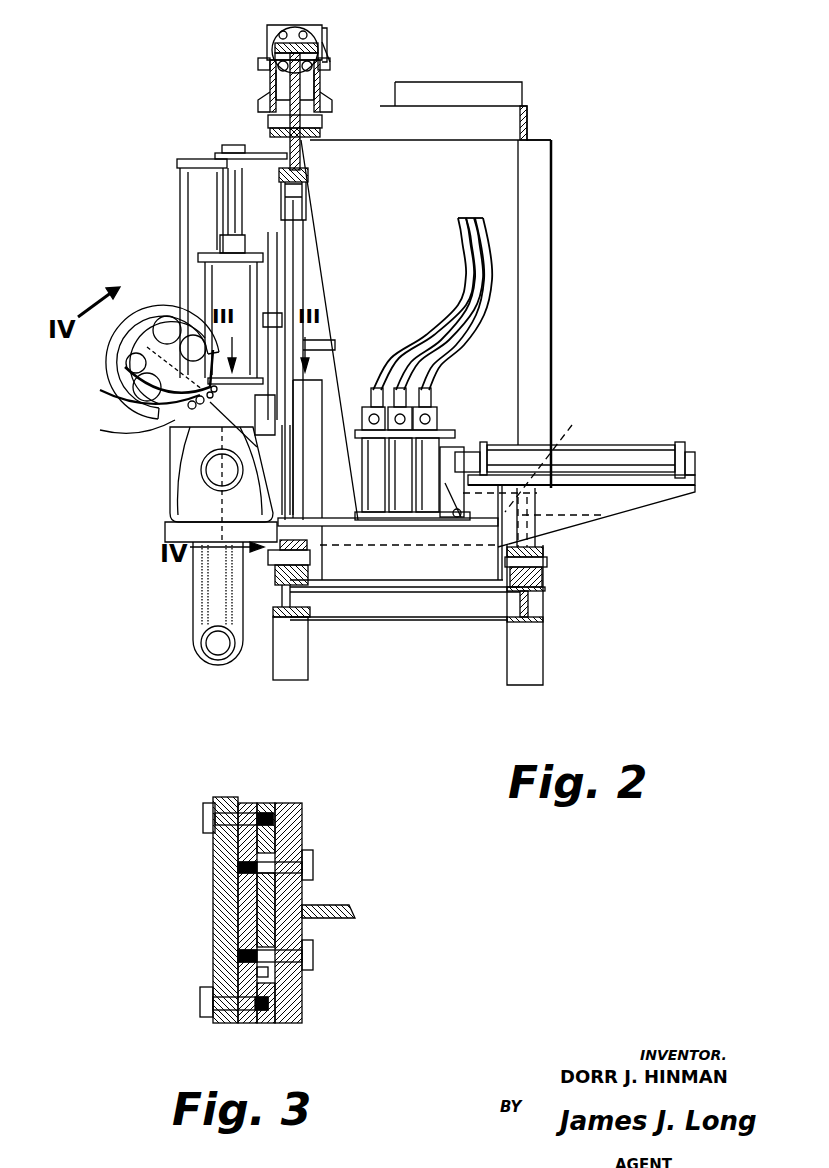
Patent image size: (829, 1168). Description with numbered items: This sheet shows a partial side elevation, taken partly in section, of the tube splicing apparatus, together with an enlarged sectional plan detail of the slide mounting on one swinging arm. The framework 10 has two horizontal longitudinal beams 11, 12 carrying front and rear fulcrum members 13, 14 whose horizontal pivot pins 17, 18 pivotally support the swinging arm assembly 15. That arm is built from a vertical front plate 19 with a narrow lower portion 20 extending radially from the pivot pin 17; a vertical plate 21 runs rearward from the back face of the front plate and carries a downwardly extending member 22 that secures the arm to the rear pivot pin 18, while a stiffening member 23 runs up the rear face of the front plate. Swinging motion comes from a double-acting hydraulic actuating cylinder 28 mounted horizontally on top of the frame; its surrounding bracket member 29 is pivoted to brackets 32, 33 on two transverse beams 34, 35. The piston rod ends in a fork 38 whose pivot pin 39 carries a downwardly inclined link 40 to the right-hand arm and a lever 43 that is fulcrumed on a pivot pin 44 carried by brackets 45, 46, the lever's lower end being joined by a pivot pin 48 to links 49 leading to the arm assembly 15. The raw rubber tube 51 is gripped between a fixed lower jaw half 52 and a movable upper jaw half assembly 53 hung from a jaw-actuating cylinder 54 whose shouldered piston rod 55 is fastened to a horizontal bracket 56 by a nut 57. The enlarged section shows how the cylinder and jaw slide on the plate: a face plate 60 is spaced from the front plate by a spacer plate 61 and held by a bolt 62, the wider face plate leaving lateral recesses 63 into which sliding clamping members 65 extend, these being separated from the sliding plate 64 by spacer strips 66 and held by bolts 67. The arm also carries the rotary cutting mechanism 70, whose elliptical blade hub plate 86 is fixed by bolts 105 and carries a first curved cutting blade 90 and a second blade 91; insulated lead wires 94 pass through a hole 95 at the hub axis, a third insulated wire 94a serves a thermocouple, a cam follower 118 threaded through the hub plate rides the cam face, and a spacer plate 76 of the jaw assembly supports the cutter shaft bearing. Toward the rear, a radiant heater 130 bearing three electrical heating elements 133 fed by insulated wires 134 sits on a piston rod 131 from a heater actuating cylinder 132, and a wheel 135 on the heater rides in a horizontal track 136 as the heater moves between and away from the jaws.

In FIG. 2, the framework 10 is at (560, 272).
In FIG. 2, the horizontal longitudinally extending beam 11 is at (292, 592).
In FIG. 2, the horizontal longitudinally extending beam 12 is at (543, 607).
In FIG. 2, the front fulcrum member 13 is at (318, 572).
In FIG. 2, the rear fulcrum member 14 is at (545, 578).
In FIG. 2, the swinging arm assembly 15 is at (356, 362).
In FIG. 2, the horizontal pivot pin 17 is at (320, 548).
In FIG. 2, the horizontal pivot pin 18 is at (547, 563).
In FIG. 2, the vertical front plate 19 is at (303, 215).
In FIG. 3, the vertical front plate 19 is at (288, 810).
In FIG. 2, the lower portion 20 is at (278, 583).
In FIG. 2, the vertical plate 21 is at (587, 451).
In FIG. 2, the downwardly extending member 22 is at (600, 515).
In FIG. 2, the stiffening member 23 is at (322, 240).
In FIG. 3, the stiffening member 23 is at (345, 905).
In FIG. 2, the double-acting hydraulic actuating cylinder 28 is at (296, 30).
In FIG. 2, the surrounding bracket member 29 is at (267, 35).
In FIG. 2, the bracket 32 is at (258, 62).
In FIG. 2, the bracket 33 is at (330, 50).
In FIG. 2, the horizontal transverse beam 34 is at (262, 99).
In FIG. 2, the horizontal transverse beam 35 is at (318, 88).
In FIG. 2, the fork 38 is at (283, 30).
In FIG. 2, the pivot pin 39 is at (328, 30).
In FIG. 2, the downwardly inclined link 40 is at (270, 85).
In FIG. 2, the lever 43 is at (290, 150).
In FIG. 2, the pivot pin 44 is at (357, 132).
In FIG. 2, the downwardly extending bracket 45 is at (270, 118).
In FIG. 2, the downwardly extending bracket 46 is at (320, 110).
In FIG. 2, the pivot pin 48 is at (306, 175).
In FIG. 2, the links 49 is at (300, 195).
In FIG. 2, the raw rubber tube 51 is at (193, 605).
In FIG. 2, the fixed lower jaw half 52 is at (170, 535).
In FIG. 2, the upper jaw half assembly 53 is at (170, 520).
In FIG. 2, the jaw-actuating cylinder 54 is at (205, 285).
In FIG. 2, the shouldered piston rod 55 is at (228, 224).
In FIG. 2, the horizontal bracket 56 is at (230, 176).
In FIG. 2, the nut 57 is at (225, 156).
In FIG. 2, the face plate 60 is at (285, 238).
In FIG. 3, the face plate 60 is at (222, 928).
In FIG. 2, the spacer plate 61 is at (303, 258).
In FIG. 3, the spacer plate 61 is at (268, 932).
In FIG. 2, the bolt 62 is at (310, 345).
In FIG. 3, the bolt 62 is at (313, 958).
In FIG. 3, the lateral recesses 63 is at (270, 980).
In FIG. 2, the sliding plate 64 is at (282, 310).
In FIG. 3, the sliding plate 64 is at (245, 890).
In FIG. 2, the lateral sliding clamping members 65 is at (340, 302).
In FIG. 3, the lateral sliding clamping members 65 is at (265, 1023).
In FIG. 2, the spacer strips 66 is at (303, 352).
In FIG. 3, the spacer strips 66 is at (242, 1024).
In FIG. 2, the bolts 67 is at (258, 420).
In FIG. 3, the bolts 67 is at (205, 1003).
In FIG. 2, the rotary cutting mechanism 70 is at (104, 354).
In FIG. 2, the spacer plate 76 is at (290, 447).
In FIG. 2, the blade hub plate 86 is at (157, 347).
In FIG. 2, the first curved cutting blade 90 is at (150, 410).
In FIG. 2, the second cutting blade 91 is at (155, 318).
In FIG. 2, the insulated lead wires 94 is at (190, 410).
In FIG. 2, the third insulated wire 94a is at (125, 393).
In FIG. 2, the hole 95 is at (205, 420).
In FIG. 2, the bolts 105 is at (218, 430).
In FIG. 2, the cam follower 118 is at (231, 483).
In FIG. 2, the radiant heater 130 is at (445, 388).
In FIG. 2, the piston rod 131 is at (462, 450).
In FIG. 2, the heater actuating cylinder 132 is at (602, 450).
In FIG. 2, the electrical heating elements 133 is at (445, 425).
In FIG. 2, the insulated wires 134 is at (445, 348).
In FIG. 2, the wheel 135 is at (452, 500).
In FIG. 2, the track 136 is at (338, 523).